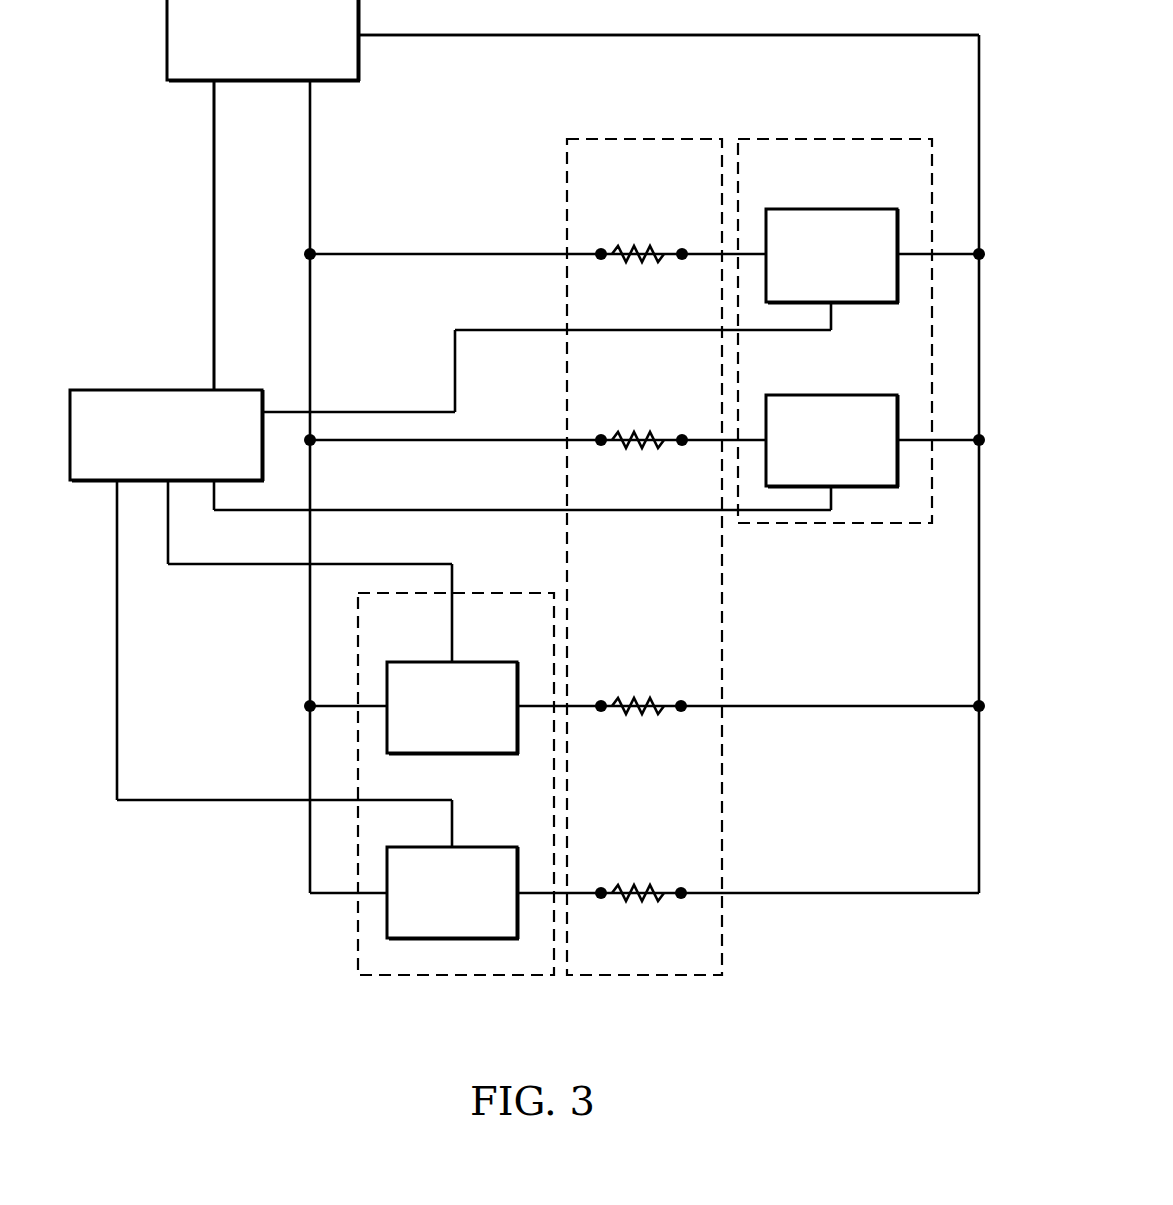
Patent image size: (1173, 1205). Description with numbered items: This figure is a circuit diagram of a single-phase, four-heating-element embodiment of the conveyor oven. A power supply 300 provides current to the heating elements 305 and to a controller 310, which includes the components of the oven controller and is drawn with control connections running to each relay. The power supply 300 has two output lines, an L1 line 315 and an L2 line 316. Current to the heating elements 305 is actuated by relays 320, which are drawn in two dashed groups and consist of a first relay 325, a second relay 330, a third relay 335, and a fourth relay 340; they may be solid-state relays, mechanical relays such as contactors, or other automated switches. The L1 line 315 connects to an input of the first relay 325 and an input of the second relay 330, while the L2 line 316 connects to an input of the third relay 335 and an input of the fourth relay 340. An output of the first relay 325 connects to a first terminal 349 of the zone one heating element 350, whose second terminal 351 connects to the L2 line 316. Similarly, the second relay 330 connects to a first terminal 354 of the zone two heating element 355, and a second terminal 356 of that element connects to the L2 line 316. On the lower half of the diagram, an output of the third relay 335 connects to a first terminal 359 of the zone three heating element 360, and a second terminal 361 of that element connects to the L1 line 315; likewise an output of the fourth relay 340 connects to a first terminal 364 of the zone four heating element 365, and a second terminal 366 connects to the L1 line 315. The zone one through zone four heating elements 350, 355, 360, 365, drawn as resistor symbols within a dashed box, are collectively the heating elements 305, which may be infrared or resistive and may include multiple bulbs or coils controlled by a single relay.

The power supply 300 is at (167, 35).
The heating elements 305 is at (645, 139).
The controller 310 is at (120, 390).
The L1 line 315 is at (410, 40).
The L2 line 316 is at (214, 162).
The relays 320 is at (836, 139).
The first relay 325 is at (831, 209).
The second relay 330 is at (831, 395).
The third relay 335 is at (493, 662).
The fourth relay 340 is at (493, 847).
The first terminal of the zone 1 heating element 349 is at (682, 248).
The zone 1 heating element 350 is at (645, 262).
The second terminal of the zone 1 heating element 351 is at (602, 248).
The first terminal of the zone 2 heating element 354 is at (682, 434).
The zone 2 heating element 355 is at (645, 448).
The second terminal of the zone 2 heating element 356 is at (602, 434).
The first terminal of the zone 3 heating element 359 is at (602, 702).
The zone 3 heating element 360 is at (645, 714).
The second terminal of the zone 3 heating element 361 is at (682, 702).
The first terminal of the zone 4 heating element 364 is at (602, 889).
The zone 4 heating element 365 is at (645, 901).
The second terminal of the zone 4 heating element 366 is at (682, 889).